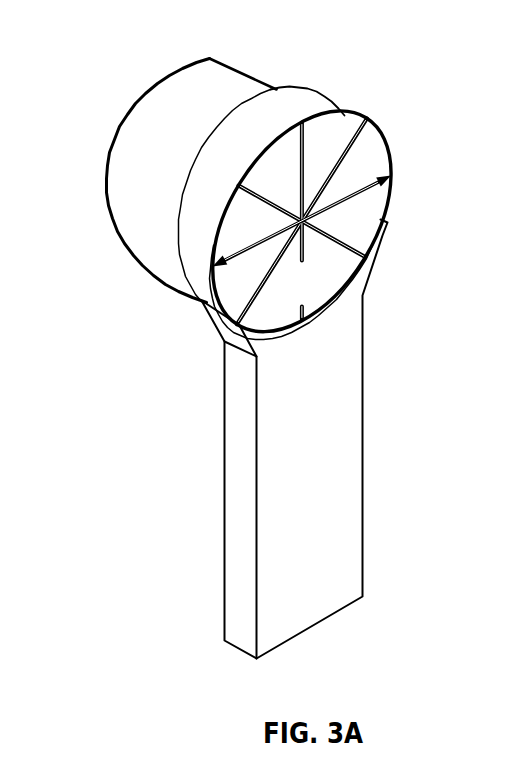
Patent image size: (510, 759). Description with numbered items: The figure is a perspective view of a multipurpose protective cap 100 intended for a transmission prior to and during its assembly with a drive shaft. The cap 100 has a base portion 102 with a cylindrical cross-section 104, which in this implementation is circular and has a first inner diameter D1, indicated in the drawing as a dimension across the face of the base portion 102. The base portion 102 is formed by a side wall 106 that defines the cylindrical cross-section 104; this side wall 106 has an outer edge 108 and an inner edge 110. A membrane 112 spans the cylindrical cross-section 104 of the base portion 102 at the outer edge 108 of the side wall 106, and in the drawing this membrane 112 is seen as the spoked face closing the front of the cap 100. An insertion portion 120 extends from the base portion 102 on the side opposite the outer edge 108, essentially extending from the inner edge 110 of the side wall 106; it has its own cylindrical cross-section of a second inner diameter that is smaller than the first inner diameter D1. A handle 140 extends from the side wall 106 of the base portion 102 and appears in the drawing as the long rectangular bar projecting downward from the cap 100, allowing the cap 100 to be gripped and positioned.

The multipurpose protective cap 100 is at (92, 29).
The base portion 102 is at (186, 311).
The cylindrical cross-section 104 is at (372, 152).
The side wall 106 is at (285, 98).
The outer edge 108 is at (217, 238).
The inner edge 110 is at (180, 205).
The membrane 112 is at (328, 297).
The insertion portion 120 is at (120, 104).
The handle 140 is at (279, 483).
The first inner diameter D1 is at (250, 250).